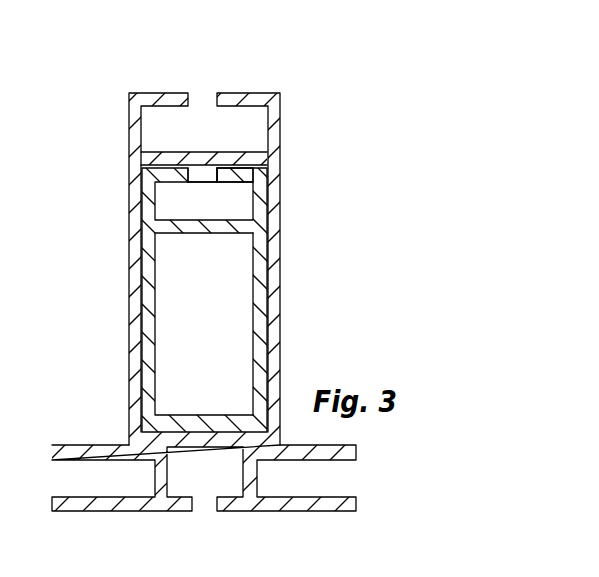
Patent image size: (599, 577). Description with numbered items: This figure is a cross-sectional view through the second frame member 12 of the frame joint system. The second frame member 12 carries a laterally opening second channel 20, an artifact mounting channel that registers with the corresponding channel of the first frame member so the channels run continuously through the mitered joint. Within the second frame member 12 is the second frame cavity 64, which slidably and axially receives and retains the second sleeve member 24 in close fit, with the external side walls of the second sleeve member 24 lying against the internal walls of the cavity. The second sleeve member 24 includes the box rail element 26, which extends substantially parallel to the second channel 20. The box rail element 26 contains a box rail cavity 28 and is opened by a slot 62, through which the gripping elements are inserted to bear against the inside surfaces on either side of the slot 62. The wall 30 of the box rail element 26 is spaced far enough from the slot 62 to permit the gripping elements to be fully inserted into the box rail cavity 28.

The second frame member 12 is at (283, 108).
The second channel 20 is at (270, 479).
The second sleeve member 24 is at (148, 367).
The box rail element 26 is at (223, 200).
The box rail cavity 28 is at (180, 197).
The wall 30 is at (218, 210).
The slot 62 is at (200, 175).
The second frame cavity 64 is at (260, 307).